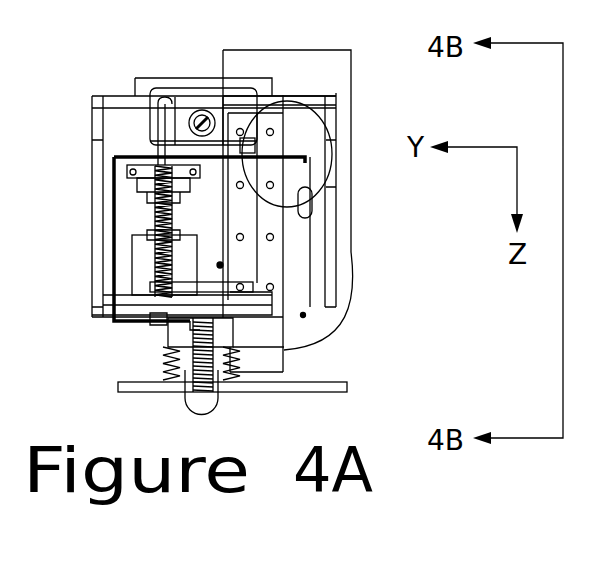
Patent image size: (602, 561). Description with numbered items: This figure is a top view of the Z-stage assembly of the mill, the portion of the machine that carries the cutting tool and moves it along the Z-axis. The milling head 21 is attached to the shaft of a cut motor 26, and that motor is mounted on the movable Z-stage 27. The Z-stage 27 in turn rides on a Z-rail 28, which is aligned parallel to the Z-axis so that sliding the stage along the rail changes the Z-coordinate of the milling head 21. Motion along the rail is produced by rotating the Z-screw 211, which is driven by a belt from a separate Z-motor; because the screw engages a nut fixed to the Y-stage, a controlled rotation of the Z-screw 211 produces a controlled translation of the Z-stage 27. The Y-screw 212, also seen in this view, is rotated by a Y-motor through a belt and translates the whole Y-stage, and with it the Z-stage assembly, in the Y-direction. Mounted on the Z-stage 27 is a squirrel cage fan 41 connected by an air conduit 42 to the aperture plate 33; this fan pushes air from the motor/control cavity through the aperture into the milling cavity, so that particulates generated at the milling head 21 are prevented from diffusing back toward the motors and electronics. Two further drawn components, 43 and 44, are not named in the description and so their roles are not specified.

The squirrel cage fan 41 is at (352, 118).
The Z-stage 27 is at (300, 287).
The air conduit 42 is at (334, 328).
The Z-rail 28 is at (318, 300).
The cut motor 26 is at (223, 226).
The Y-screw 212 is at (140, 190).
The coil spring 43 is at (147, 237).
The Z-screw 211 is at (150, 324).
The compression springs 44 is at (173, 360).
The milling head 21 is at (200, 403).
The aperture plate 33 is at (295, 385).